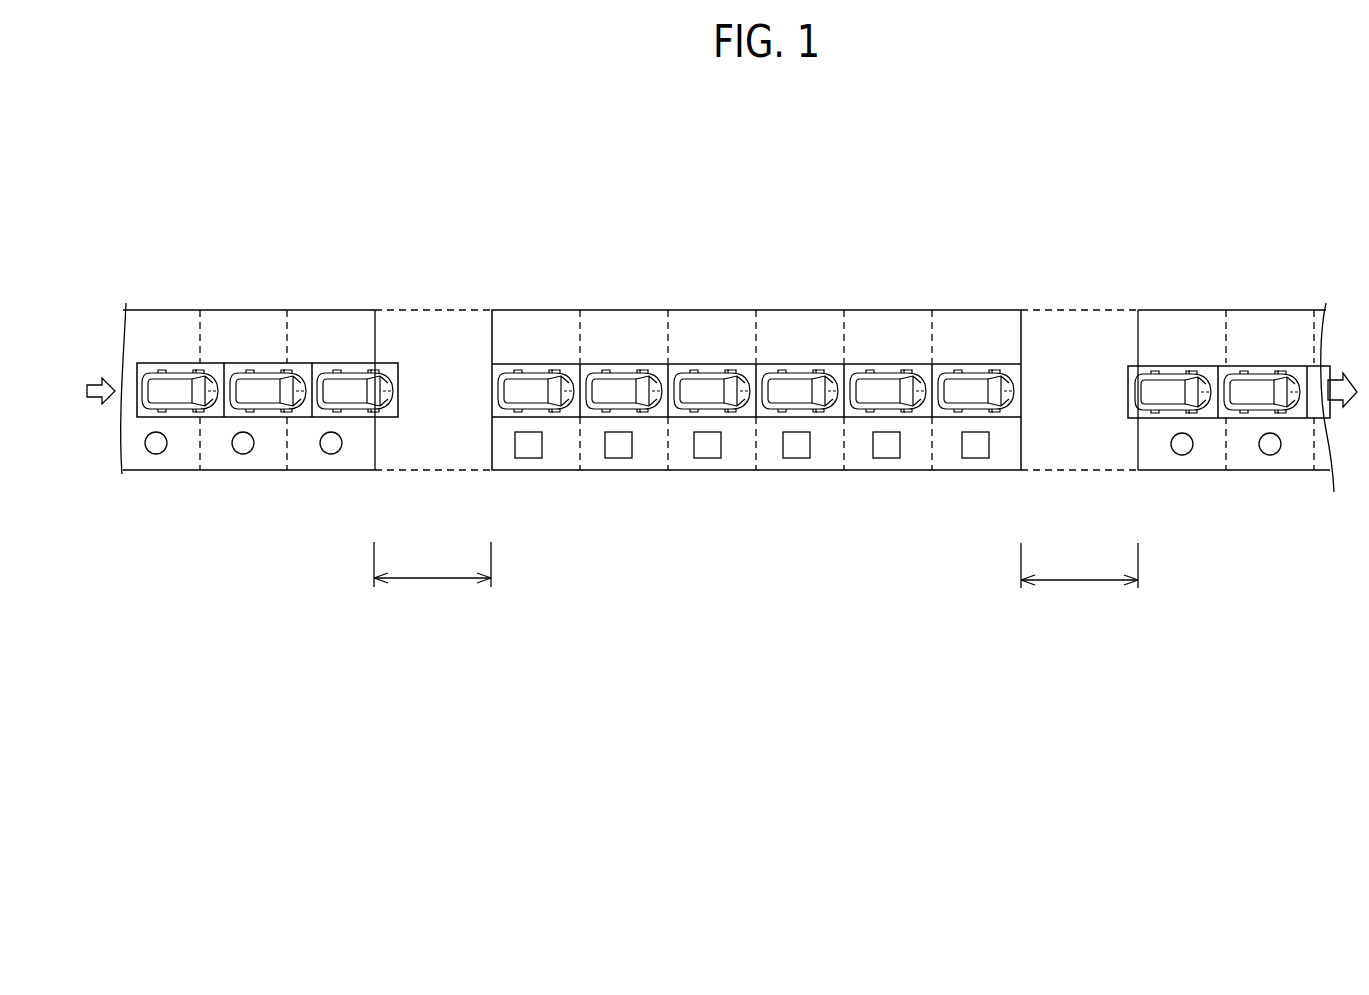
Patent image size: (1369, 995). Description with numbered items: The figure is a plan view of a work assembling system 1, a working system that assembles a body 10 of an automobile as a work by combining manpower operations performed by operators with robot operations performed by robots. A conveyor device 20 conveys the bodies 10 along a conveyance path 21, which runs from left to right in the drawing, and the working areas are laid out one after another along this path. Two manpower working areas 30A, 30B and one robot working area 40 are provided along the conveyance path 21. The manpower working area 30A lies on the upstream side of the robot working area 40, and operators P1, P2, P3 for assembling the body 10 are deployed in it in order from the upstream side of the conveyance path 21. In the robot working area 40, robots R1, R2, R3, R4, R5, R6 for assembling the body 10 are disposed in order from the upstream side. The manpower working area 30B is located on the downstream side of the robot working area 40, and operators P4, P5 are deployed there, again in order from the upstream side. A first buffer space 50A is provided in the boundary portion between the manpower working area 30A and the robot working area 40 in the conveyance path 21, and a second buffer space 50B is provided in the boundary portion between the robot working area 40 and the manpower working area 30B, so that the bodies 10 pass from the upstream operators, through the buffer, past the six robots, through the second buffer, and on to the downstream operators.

The work assembling system 1 is at (826, 170).
The body 10 is at (265, 406).
The conveyor device 20 is at (1319, 382).
The conveyance path 21 is at (1315, 402).
The manpower working area 30A is at (262, 309).
The manpower working area 30B is at (1202, 310).
The robot working area 40 is at (805, 310).
The first buffer space 50A is at (443, 308).
The second buffer space 50B is at (1043, 310).
The operator P1 is at (156, 454).
The operator P2 is at (243, 454).
The operator P3 is at (331, 454).
The operator P4 is at (1182, 455).
The operator P5 is at (1270, 455).
The robot R1 is at (528, 458).
The robot R2 is at (618, 458).
The robot R3 is at (707, 458).
The robot R4 is at (797, 458).
The robot R5 is at (886, 458).
The robot R6 is at (975, 458).